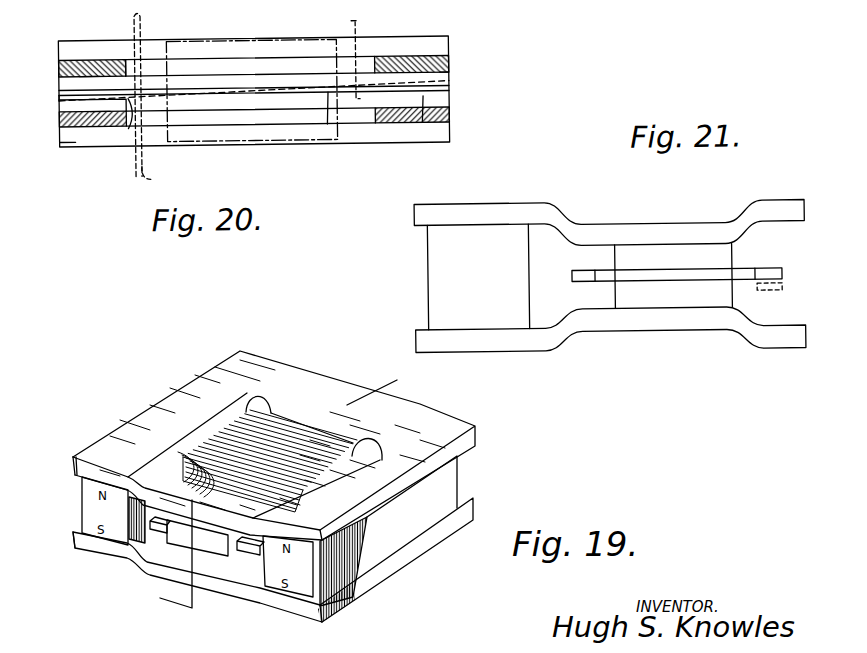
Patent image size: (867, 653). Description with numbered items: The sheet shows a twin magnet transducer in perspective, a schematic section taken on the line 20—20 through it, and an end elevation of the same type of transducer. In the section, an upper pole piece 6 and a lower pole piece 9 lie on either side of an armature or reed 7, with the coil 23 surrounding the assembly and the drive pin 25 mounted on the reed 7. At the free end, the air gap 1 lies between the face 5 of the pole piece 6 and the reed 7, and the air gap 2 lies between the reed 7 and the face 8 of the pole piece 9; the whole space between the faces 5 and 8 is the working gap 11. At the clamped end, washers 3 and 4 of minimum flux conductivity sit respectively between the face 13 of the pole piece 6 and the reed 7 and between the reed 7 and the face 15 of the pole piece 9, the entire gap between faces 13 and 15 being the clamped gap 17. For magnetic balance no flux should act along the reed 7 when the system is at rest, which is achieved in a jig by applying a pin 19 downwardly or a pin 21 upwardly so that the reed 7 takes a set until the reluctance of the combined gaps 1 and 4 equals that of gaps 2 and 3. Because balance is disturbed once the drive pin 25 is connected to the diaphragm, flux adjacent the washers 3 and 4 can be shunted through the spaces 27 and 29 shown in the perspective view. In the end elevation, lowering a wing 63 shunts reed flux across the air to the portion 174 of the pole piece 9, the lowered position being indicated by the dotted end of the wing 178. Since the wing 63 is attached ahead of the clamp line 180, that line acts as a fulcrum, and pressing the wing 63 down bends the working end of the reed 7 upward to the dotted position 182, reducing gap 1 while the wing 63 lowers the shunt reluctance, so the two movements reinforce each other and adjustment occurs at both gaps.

In FIG. 20, the air gap 1 is at (433, 74).
In FIG. 20, the air gap 2 is at (443, 97).
In FIG. 20, the washer 3 is at (59, 80).
In FIG. 20, the washer 4 is at (70, 106).
In FIG. 20, the face 5 is at (443, 70).
In FIG. 20, the pole piece 6 is at (285, 44).
In FIG. 20, the armature or reed 7 is at (327, 125).
In FIG. 20, the face 8 is at (422, 124).
In FIG. 20, the pole piece 9 is at (258, 133).
In FIG. 21, the pole piece 9 is at (680, 331).
In FIG. 20, the working gap 11 is at (460, 88).
In FIG. 20, the face 13 is at (84, 78).
In FIG. 20, the face 15 is at (102, 107).
In FIG. 20, the clamped gap 17 is at (58, 95).
In FIG. 20, the pin 19 is at (141, 15).
In FIG. 19, the section line 20— 20 is at (172, 601).
In FIG. 20, the pin 21 is at (150, 178).
In FIG. 20, the coil 23 is at (210, 38).
In FIG. 19, the coil 23 is at (267, 461).
In FIG. 20, the drive pin 25 is at (360, 21).
In FIG. 19, the space 27 is at (160, 528).
In FIG. 19, the space 29 is at (258, 582).
In FIG. 20, the wing 63 is at (67, 146).
In FIG. 21, the portion of the lower pole piece 174 is at (788, 350).
In FIG. 21, the dotted end of the wing 178 is at (786, 282).
In FIG. 20, the clamp line 180 is at (130, 124).
In FIG. 20, the dotted position 182 is at (449, 83).